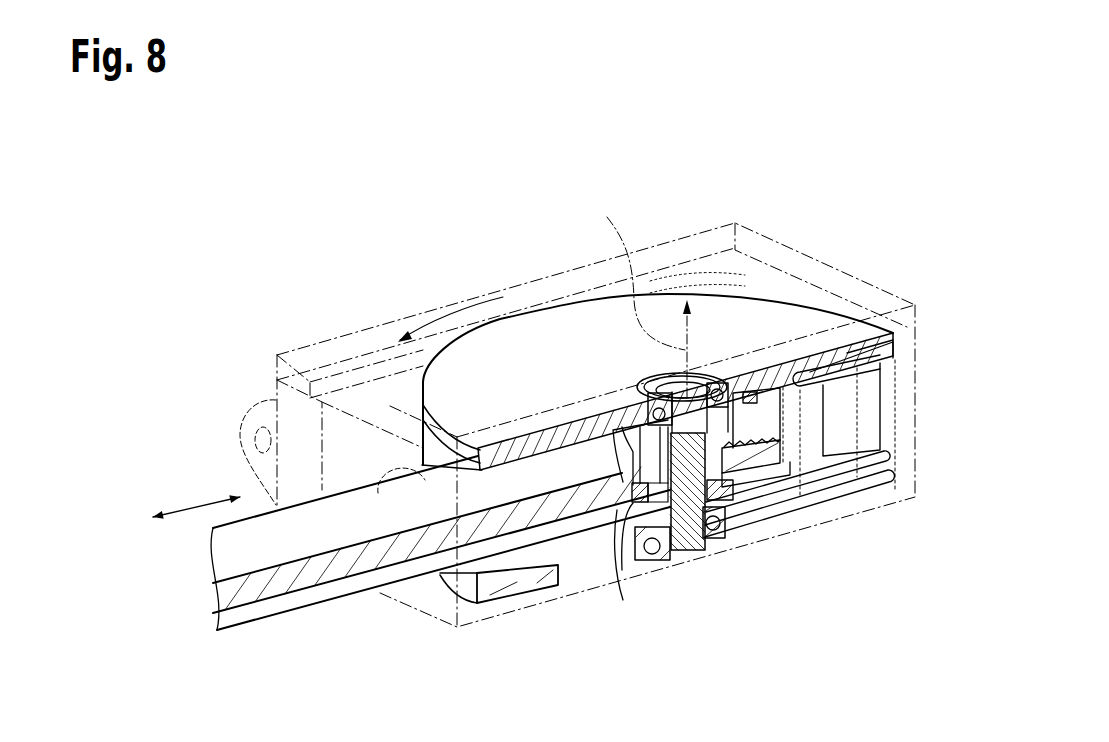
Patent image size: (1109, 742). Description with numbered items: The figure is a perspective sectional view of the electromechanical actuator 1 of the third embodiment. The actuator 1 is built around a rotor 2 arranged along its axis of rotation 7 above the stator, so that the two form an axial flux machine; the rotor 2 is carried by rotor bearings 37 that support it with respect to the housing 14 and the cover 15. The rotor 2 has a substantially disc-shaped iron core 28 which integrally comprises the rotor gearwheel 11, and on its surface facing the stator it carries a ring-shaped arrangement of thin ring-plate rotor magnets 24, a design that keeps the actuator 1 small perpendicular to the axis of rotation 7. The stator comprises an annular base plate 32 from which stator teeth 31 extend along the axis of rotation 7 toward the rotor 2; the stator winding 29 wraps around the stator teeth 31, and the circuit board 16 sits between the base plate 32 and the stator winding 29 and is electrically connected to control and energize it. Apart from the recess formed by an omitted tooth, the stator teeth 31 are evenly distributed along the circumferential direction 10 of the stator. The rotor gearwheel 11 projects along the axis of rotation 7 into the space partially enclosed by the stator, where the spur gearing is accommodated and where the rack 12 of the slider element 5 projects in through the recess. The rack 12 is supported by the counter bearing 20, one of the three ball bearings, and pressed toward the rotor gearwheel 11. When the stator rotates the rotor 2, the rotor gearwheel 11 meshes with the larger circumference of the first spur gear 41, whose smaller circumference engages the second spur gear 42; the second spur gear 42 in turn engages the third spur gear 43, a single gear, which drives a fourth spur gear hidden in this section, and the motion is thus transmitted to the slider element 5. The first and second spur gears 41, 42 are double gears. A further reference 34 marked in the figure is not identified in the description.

The actuator 1 is at (325, 193).
The rotor 2 is at (693, 304).
The slider element 5 is at (283, 627).
The axis of rotation 7 is at (643, 291).
The circumferential direction 10 is at (424, 327).
The rotor gearwheel 11 is at (688, 530).
The rack 12 is at (748, 395).
The housing 14 is at (445, 623).
The cover 15 is at (327, 338).
The circuit board 16 is at (888, 457).
The counter bearing 20 is at (668, 520).
The rotor magnets 24 is at (848, 352).
The iron core 28 is at (795, 323).
The stator winding 29 is at (860, 420).
The stator teeth 31 is at (880, 360).
The base plate 32 is at (873, 483).
The direction of displacement 34 is at (188, 507).
The rotor bearings 37 is at (718, 383).
The first spur gear 41 is at (623, 500).
The second spur gear 42 is at (770, 455).
The third spur gear 43 is at (745, 487).